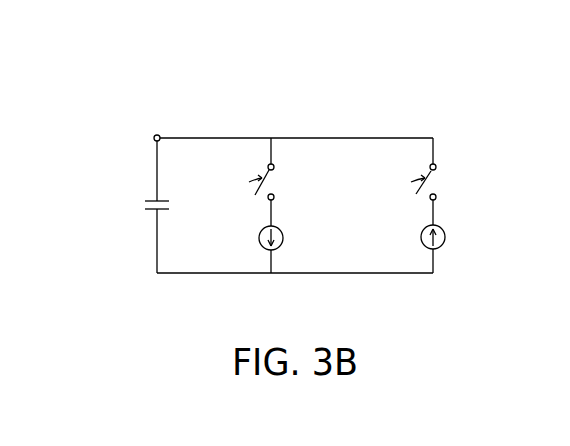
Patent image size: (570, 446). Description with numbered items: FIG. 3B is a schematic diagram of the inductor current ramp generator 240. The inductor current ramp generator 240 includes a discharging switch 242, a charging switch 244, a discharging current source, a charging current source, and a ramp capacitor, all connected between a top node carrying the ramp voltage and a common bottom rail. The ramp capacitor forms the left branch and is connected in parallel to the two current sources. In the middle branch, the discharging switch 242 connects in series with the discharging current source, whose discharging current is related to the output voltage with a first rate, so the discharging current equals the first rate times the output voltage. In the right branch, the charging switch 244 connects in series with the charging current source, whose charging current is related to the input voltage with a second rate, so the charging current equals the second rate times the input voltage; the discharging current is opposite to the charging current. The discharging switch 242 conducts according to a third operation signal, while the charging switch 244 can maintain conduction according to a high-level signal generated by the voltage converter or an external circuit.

The inductor current ramp generator 240 is at (145, 61).
The discharging switch 242 is at (266, 182).
The charging switch 244 is at (427, 182).